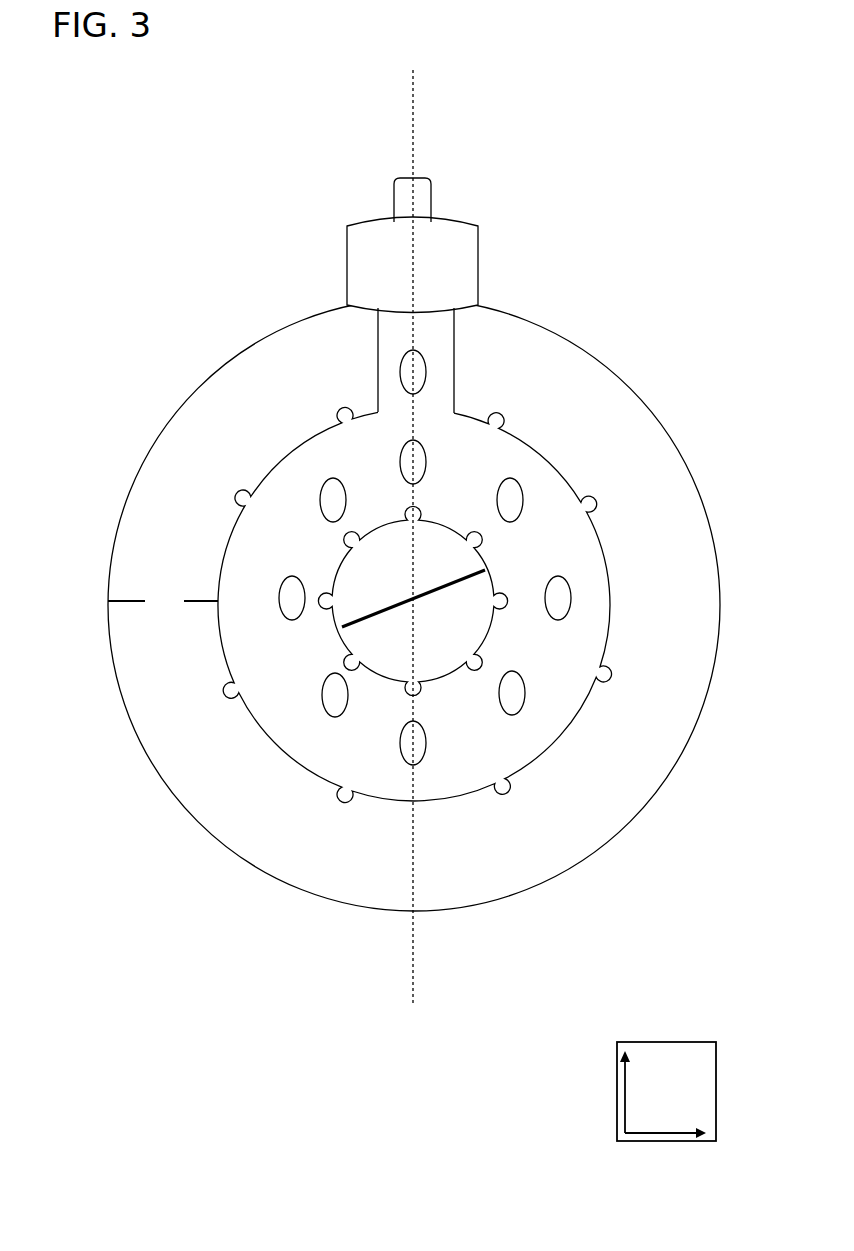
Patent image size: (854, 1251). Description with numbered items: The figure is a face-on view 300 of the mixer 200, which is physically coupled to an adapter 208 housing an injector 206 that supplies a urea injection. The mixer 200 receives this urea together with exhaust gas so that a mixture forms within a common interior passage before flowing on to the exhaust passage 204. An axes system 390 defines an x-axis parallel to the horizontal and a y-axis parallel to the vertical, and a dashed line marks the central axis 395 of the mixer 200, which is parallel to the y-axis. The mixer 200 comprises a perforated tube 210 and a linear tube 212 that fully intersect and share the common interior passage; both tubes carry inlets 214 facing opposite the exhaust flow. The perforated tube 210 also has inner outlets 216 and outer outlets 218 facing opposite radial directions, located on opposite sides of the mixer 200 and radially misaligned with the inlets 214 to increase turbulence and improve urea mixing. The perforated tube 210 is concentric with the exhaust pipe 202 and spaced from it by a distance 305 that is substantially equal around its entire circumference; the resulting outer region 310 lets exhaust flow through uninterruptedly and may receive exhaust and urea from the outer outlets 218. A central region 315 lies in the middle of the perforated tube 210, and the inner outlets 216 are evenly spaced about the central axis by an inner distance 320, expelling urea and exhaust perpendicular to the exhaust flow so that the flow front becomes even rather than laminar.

The mixer 200 is at (591, 152).
The exhaust pipe 202 is at (595, 352).
The exhaust passage 204 is at (288, 870).
The injector 206 is at (421, 177).
The adapter 208 is at (396, 277).
The perforated tube 210 is at (565, 472).
The linear tube 212 is at (454, 375).
The inlets 214 is at (291, 563).
The inner outlets 216 is at (414, 540).
The outer outlets 218 is at (208, 501).
The face-on view 300 is at (164, 108).
The distance 305 is at (163, 602).
The outer region 310 is at (249, 791).
The central region 315 is at (381, 601).
The inner distance 320 is at (413, 598).
The axes system 390 is at (697, 1042).
The central axis 395 is at (415, 945).